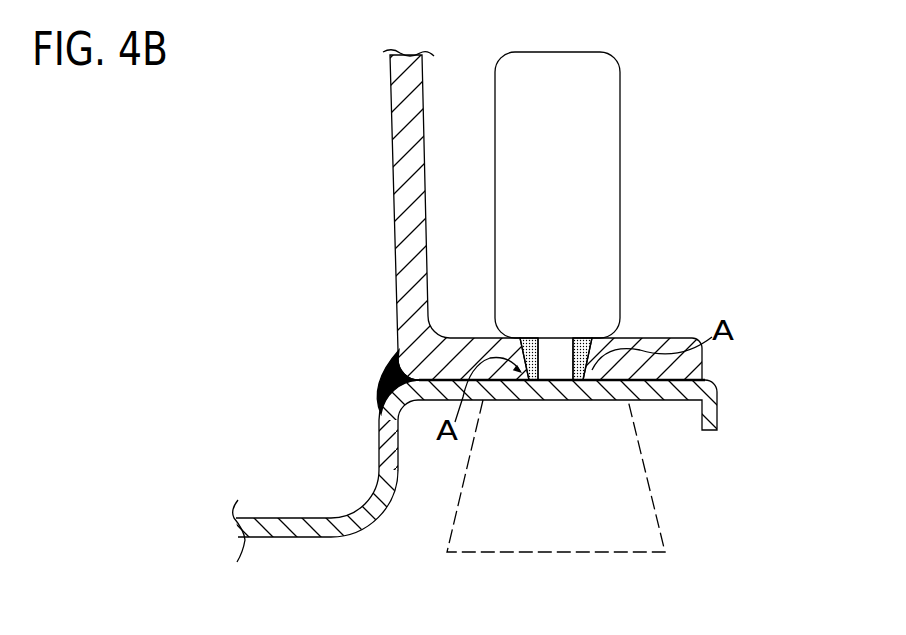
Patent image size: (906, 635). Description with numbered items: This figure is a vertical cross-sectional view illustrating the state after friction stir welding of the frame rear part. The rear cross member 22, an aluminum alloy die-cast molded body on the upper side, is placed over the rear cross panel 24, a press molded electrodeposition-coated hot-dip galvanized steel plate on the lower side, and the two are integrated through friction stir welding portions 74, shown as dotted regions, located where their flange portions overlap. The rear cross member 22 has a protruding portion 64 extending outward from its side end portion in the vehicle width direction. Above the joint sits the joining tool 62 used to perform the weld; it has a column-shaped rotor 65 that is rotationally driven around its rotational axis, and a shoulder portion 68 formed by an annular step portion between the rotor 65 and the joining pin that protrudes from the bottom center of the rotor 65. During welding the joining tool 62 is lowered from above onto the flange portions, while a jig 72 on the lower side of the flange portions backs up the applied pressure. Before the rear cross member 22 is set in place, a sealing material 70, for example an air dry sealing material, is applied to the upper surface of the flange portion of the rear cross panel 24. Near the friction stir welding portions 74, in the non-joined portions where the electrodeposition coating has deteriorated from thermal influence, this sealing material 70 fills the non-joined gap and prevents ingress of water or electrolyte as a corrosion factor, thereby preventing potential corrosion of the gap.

The rear cross member 22 is at (429, 166).
The rear cross panel 24 is at (282, 546).
The joining tool 62 is at (629, 102).
The protruding portion 64 is at (718, 403).
The rotor 65 is at (593, 185).
The shoulder portion 68 is at (471, 370).
The sealing material 70 is at (376, 380).
The jig 72 is at (583, 552).
The friction stir welding portion 74 is at (530, 345).